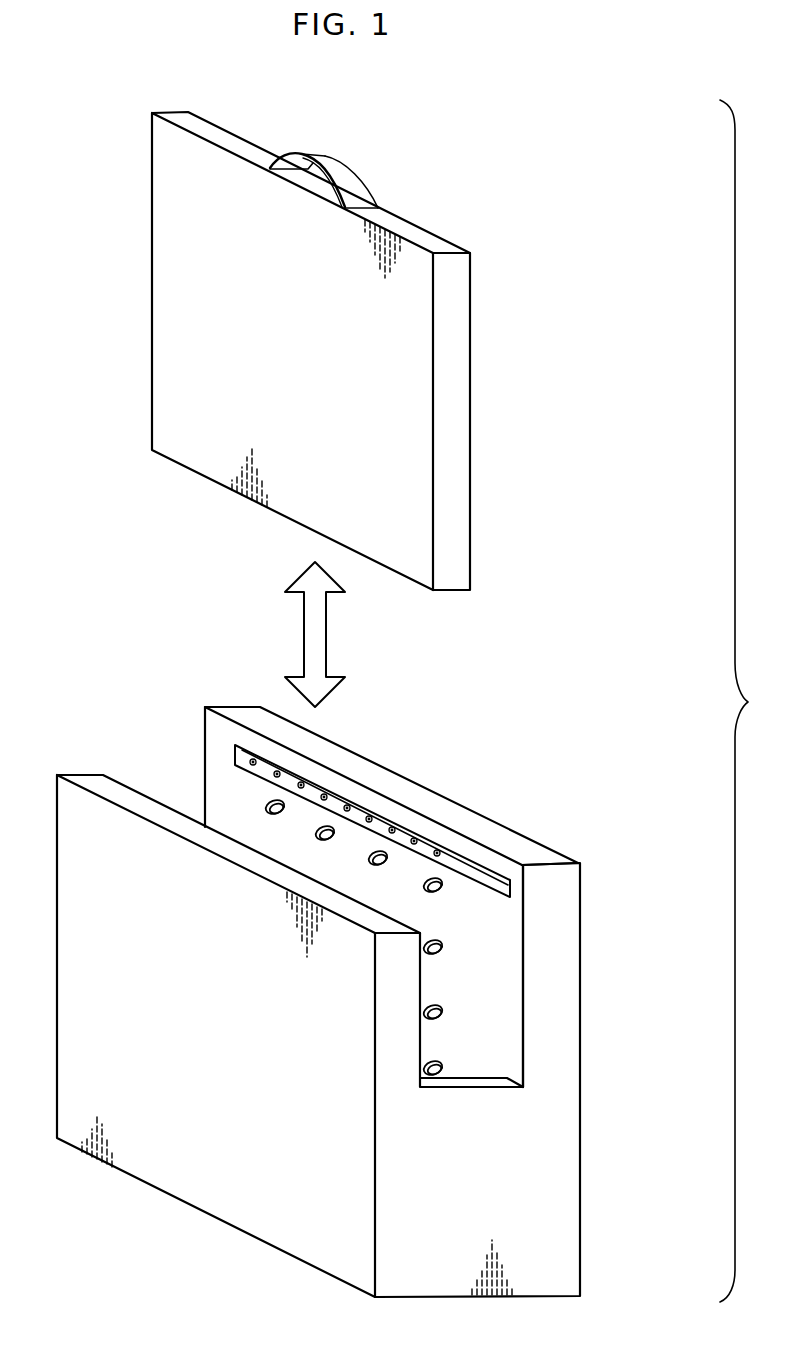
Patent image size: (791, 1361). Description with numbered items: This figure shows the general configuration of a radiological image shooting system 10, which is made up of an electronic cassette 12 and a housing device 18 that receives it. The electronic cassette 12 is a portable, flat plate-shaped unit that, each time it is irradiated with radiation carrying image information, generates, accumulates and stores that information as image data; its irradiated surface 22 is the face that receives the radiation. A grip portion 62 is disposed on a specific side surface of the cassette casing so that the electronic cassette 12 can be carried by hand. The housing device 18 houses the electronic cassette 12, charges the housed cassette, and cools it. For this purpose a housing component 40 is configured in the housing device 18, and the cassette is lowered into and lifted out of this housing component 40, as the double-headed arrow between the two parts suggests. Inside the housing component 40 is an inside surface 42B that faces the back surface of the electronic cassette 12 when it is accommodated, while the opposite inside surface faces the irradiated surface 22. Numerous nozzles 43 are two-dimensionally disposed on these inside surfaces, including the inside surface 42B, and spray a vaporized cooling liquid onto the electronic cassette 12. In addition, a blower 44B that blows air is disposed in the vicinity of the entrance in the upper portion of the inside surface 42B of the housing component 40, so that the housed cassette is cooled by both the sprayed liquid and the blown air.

The radiological image shooting system 10 is at (542, 217).
The electronic cassette 12 is at (428, 233).
The irradiated surface 22 is at (172, 303).
The grip portion 62 is at (360, 174).
The housing component 40 is at (187, 770).
The housing device 18 is at (522, 837).
The inside surface 42B is at (510, 953).
The nozzles 43 is at (445, 890).
The blower 44B is at (250, 767).